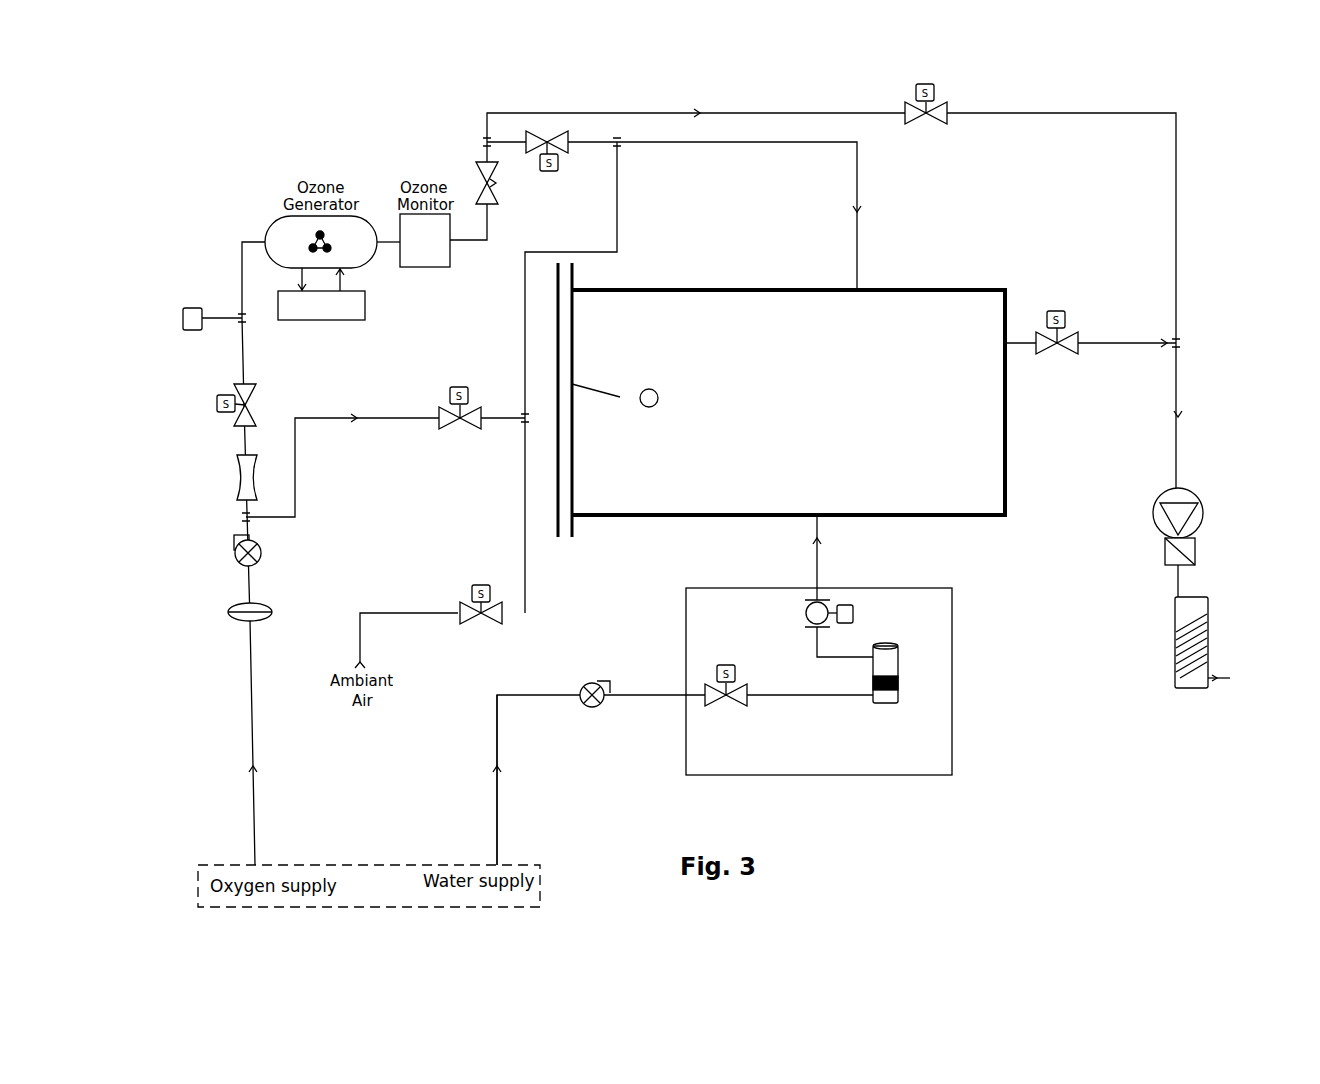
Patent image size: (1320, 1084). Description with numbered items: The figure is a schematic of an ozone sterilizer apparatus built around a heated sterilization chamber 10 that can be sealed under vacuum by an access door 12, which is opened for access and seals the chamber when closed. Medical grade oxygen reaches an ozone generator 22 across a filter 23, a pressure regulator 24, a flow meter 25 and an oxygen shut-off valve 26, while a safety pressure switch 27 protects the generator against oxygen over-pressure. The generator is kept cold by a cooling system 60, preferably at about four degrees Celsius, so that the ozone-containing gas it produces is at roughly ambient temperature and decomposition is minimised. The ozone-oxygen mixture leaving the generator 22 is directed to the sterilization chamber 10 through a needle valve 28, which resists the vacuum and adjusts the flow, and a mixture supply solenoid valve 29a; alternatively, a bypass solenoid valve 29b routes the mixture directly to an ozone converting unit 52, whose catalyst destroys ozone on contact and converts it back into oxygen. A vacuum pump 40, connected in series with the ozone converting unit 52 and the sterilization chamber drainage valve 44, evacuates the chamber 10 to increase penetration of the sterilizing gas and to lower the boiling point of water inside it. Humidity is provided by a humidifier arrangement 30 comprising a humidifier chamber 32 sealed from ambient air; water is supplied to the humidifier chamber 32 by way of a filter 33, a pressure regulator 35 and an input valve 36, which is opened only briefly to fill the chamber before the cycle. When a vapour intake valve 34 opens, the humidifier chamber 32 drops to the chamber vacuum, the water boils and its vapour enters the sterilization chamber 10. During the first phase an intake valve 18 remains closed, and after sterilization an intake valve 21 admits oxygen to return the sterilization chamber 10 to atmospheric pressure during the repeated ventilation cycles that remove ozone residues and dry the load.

The sterilization chamber 10 is at (788, 378).
The access door 12 is at (599, 424).
The intake valve 18 is at (457, 578).
The intake valve 21 is at (432, 427).
The ozone generator 22 is at (286, 214).
The filter 23 is at (218, 625).
The pressure regulator 24 is at (214, 564).
The flow meter 25 is at (211, 486).
The oxygen shut-off valve 26 is at (204, 419).
The safety pressure switch 27 is at (185, 332).
The needle valve 28 is at (459, 175).
The mixture supply solenoid valve 29a is at (561, 172).
The bypass solenoid valve 29b is at (968, 121).
The humidifier arrangement 30 is at (819, 706).
The humidifier chamber 32 is at (855, 698).
The filter 33 is at (536, 780).
The vapour intake valve 34 is at (797, 622).
The pressure regulator 35 is at (621, 668).
The input valve 36 is at (735, 711).
The vacuum pump 40 is at (1212, 522).
The sterilization chamber drainage valve 44 is at (1079, 309).
The ozone converting unit 52 is at (1226, 636).
The cooling system 60 is at (350, 297).